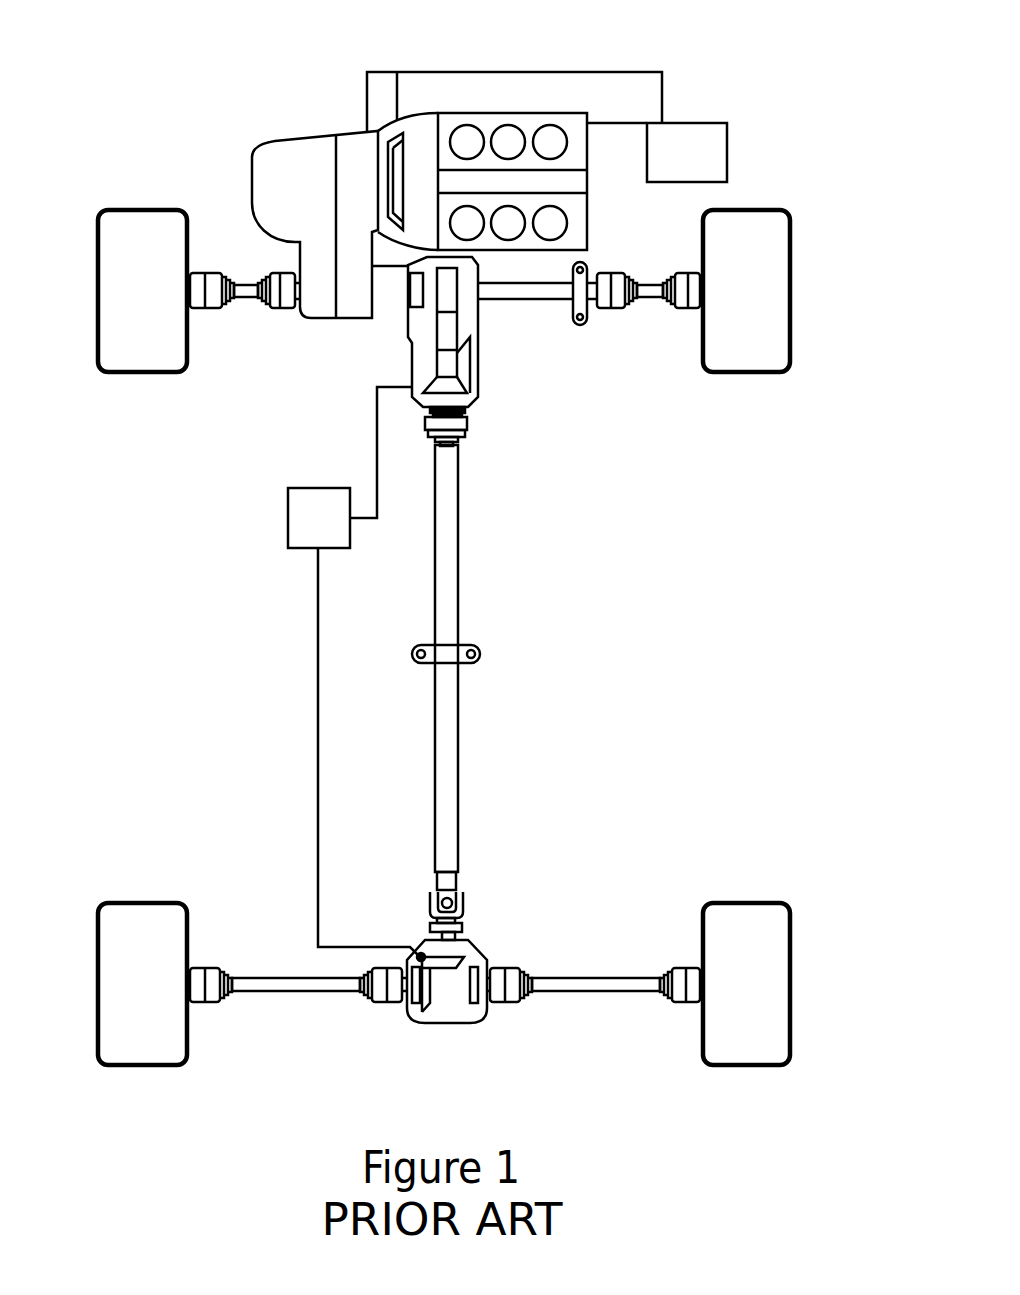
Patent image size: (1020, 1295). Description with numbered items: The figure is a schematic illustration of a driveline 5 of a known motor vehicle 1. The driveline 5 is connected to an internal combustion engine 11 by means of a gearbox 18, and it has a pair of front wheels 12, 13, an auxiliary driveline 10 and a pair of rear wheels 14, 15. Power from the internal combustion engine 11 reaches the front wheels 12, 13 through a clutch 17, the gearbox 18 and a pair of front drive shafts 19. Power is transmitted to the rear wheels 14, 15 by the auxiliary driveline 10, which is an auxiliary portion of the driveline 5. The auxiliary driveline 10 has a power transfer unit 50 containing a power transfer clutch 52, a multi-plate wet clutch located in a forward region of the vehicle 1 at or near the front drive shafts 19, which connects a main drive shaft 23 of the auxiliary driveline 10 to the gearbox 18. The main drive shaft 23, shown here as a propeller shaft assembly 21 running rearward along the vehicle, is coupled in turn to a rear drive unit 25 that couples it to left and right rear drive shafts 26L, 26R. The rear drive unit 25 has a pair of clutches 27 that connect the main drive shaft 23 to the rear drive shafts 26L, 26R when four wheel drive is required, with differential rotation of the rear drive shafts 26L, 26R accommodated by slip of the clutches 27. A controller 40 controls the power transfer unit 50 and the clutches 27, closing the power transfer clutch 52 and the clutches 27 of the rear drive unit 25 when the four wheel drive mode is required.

The motor vehicle 1 is at (785, 74).
The driveline 5 is at (650, 498).
The auxiliary driveline 10 is at (602, 628).
The internal combustion engine 11 is at (582, 222).
The front wheel 12 is at (133, 226).
The front wheel 13 is at (757, 226).
The rear wheel 14 is at (132, 1048).
The rear wheel 15 is at (733, 1048).
The clutch 17 is at (407, 192).
The gearbox 18 is at (358, 150).
The front drive shafts 19 is at (238, 292).
The propeller shaft assembly 21 is at (455, 692).
The main drive shaft 23 is at (445, 585).
The rear drive unit 25 is at (480, 955).
The left rear drive shaft 26L is at (308, 983).
The right rear drive shaft 26R is at (595, 983).
The clutches 27 is at (420, 997).
The controller 40 is at (288, 520).
The power transfer unit 50 is at (480, 365).
The power transfer clutch 52 is at (418, 290).